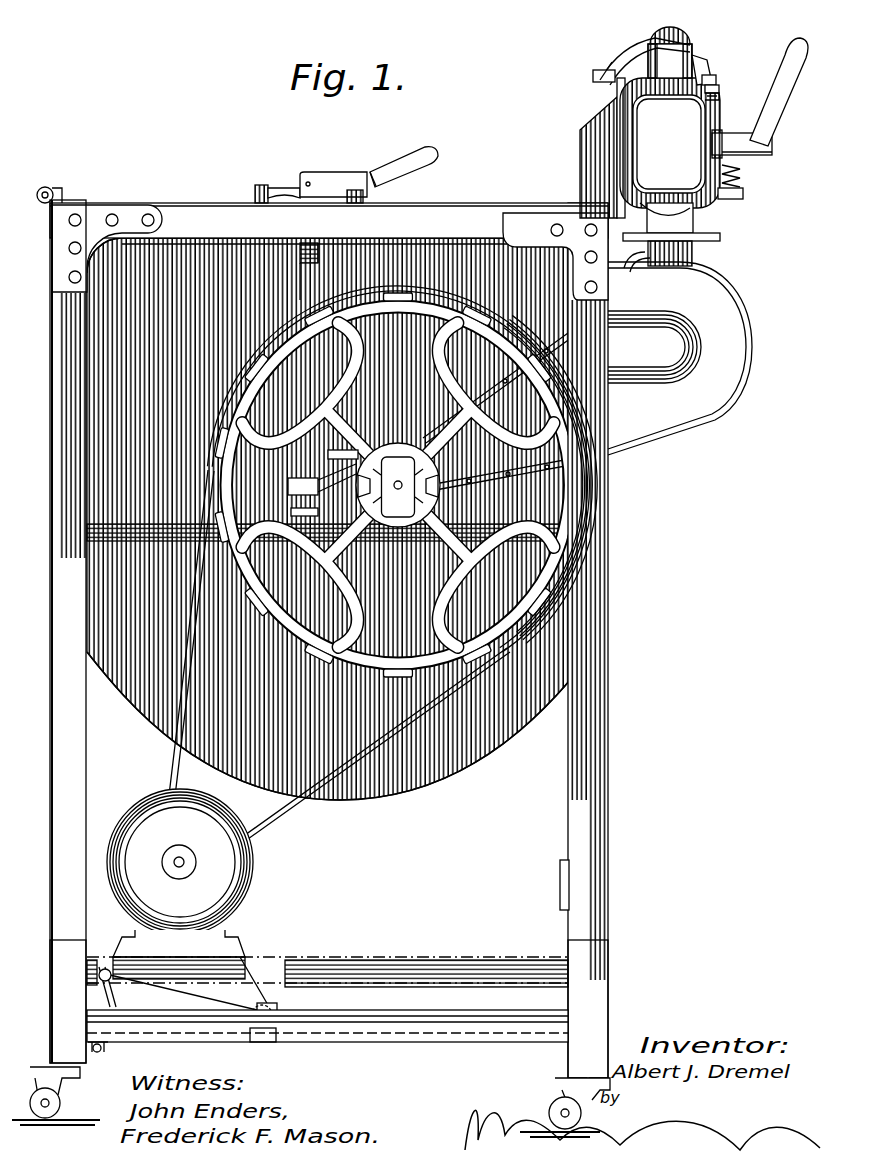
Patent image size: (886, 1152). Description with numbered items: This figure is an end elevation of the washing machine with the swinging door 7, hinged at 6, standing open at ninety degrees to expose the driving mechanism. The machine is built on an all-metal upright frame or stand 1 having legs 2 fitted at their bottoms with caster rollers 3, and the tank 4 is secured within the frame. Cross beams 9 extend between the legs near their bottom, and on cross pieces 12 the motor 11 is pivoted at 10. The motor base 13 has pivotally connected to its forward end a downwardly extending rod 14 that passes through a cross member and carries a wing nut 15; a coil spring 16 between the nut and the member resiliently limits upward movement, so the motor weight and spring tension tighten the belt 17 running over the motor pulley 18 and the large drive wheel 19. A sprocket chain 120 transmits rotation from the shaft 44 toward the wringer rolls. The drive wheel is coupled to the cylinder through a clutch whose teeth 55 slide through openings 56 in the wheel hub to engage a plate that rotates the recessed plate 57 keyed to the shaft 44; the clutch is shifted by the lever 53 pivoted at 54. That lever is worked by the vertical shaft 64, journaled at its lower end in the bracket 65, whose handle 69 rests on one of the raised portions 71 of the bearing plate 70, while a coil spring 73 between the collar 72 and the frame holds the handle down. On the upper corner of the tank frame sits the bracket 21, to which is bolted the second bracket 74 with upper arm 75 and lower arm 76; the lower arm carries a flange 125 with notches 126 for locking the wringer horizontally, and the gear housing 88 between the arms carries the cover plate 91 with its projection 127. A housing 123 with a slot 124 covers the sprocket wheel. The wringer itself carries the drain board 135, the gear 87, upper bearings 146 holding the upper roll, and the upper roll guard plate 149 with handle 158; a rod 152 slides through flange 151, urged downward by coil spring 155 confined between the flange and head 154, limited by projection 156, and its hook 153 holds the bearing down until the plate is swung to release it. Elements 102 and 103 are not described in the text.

The upright frame or stand 1 is at (62, 552).
The legs 2 is at (50, 942).
The caster rollers 3 is at (36, 1090).
The tank 4 is at (440, 750).
The hinge 6 is at (569, 870).
The swinging door 7 is at (574, 705).
The cross beams 9 is at (362, 1038).
The motor pivot 10 is at (262, 1030).
The motor 11 is at (232, 885).
The cross pieces 12 is at (277, 1010).
The motor base 13 is at (215, 984).
The downwardly extending rod 14 is at (110, 993).
The wing nut 15 is at (98, 1052).
The coil spring 16 is at (108, 1047).
The belt 17 is at (290, 800).
The motor pulley 18 is at (170, 870).
The large drive wheel 19 is at (352, 352).
The bracket 21 is at (590, 140).
The shaft 44 is at (398, 487).
The lever 53 is at (352, 466).
The lever pivot 54 is at (342, 458).
The clutch teeth 55 is at (421, 470).
The openings 56 is at (370, 475).
The recessed plate 57 is at (398, 497).
The vertical shaft 64 is at (298, 305).
The bracket 65 is at (291, 512).
The handle 69 is at (398, 158).
The bearing plate 70 is at (255, 192).
The raised portions 71 is at (268, 186).
The collar 72 is at (300, 248).
The coil spring 73 is at (320, 246).
The second bracket 74 is at (617, 170).
The upper arm 75 is at (632, 54).
The lower arm 76 is at (636, 268).
The gear 87 is at (288, 485).
The gear housing 88 is at (670, 143).
The cover plate 91 is at (724, 130).
The valve handle 102 is at (786, 46).
The valve stem 103 is at (772, 152).
The sprocket chain 120 is at (460, 423).
The housing 123 is at (680, 358).
The slot 124 is at (695, 373).
The flange 125 is at (720, 237).
The notches 126 is at (692, 252).
The projection 127 is at (693, 212).
The drain board 135 is at (740, 140).
The upper bearing 146 is at (708, 62).
The upper roll guard plate 149 is at (615, 62).
The flange 151 is at (719, 88).
The rod 152 is at (720, 97).
The hook 153 is at (690, 58).
The head 154 is at (743, 196).
The coil spring 155 is at (742, 178).
The projection 156 is at (714, 78).
The handle 158 is at (598, 70).